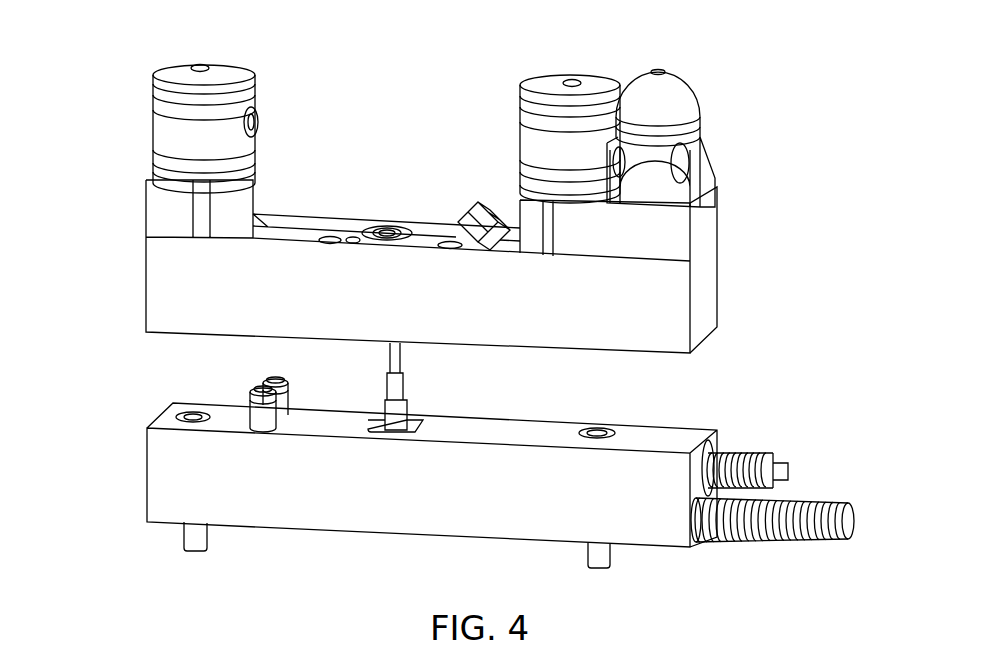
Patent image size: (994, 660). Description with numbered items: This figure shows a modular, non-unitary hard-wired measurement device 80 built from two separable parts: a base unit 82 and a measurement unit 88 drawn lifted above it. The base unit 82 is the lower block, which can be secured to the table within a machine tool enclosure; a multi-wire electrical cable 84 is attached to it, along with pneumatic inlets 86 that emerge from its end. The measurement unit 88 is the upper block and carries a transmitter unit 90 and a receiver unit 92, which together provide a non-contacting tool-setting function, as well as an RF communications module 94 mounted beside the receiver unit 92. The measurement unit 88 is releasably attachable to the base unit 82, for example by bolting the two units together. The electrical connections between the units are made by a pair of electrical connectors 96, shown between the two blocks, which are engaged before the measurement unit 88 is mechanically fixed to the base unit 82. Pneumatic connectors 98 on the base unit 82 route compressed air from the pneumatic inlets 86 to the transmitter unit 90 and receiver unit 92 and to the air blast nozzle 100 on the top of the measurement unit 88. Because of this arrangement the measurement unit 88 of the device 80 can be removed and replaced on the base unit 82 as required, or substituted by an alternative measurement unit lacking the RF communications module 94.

The hard-wired measurement device 80 is at (122, 378).
The base unit 82 is at (434, 500).
The multi-wire electrical cable 84 is at (767, 457).
The pneumatic inlets 86 is at (856, 516).
The measurement unit 88 is at (748, 278).
The transmitter unit 90 is at (227, 75).
The receiver unit 92 is at (590, 88).
The RF communications module 94 is at (685, 100).
The electrical connectors 96 is at (403, 408).
The pneumatic connectors 98 is at (286, 404).
The air blast nozzle 100 is at (472, 213).